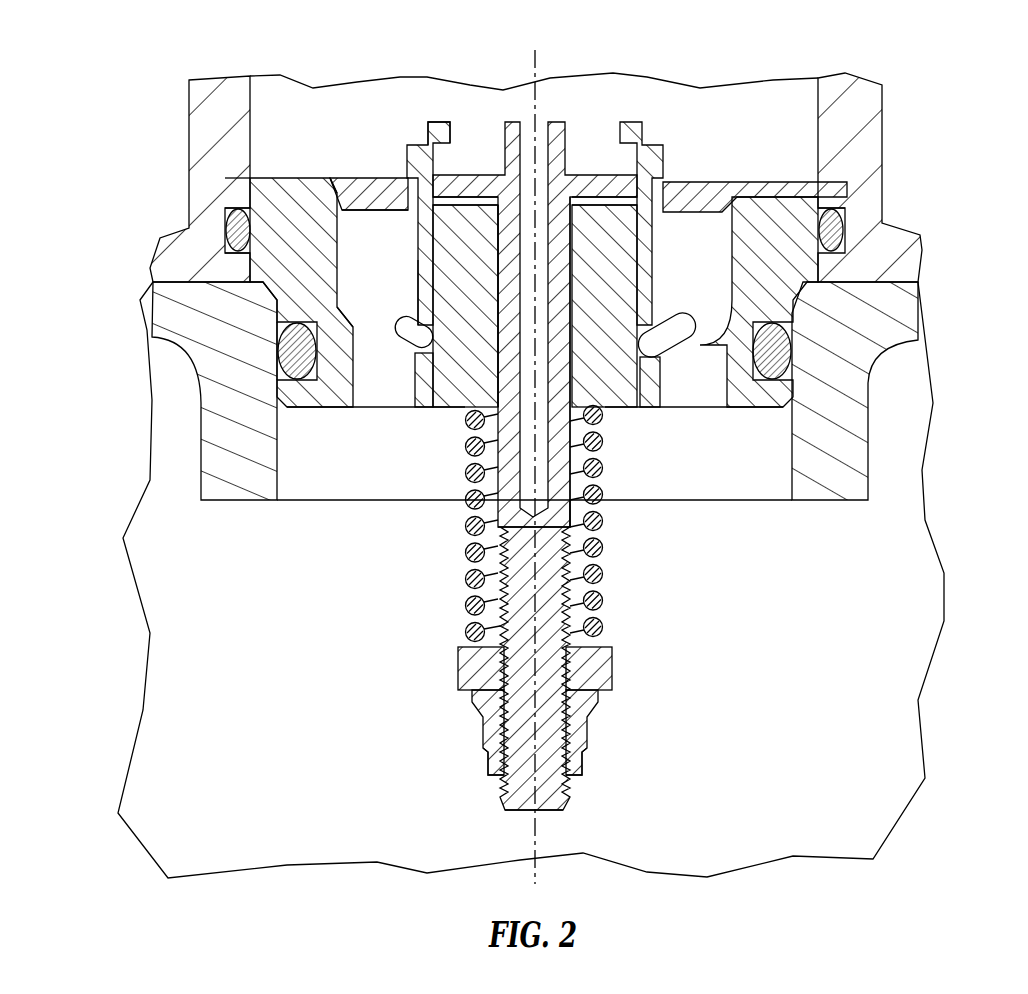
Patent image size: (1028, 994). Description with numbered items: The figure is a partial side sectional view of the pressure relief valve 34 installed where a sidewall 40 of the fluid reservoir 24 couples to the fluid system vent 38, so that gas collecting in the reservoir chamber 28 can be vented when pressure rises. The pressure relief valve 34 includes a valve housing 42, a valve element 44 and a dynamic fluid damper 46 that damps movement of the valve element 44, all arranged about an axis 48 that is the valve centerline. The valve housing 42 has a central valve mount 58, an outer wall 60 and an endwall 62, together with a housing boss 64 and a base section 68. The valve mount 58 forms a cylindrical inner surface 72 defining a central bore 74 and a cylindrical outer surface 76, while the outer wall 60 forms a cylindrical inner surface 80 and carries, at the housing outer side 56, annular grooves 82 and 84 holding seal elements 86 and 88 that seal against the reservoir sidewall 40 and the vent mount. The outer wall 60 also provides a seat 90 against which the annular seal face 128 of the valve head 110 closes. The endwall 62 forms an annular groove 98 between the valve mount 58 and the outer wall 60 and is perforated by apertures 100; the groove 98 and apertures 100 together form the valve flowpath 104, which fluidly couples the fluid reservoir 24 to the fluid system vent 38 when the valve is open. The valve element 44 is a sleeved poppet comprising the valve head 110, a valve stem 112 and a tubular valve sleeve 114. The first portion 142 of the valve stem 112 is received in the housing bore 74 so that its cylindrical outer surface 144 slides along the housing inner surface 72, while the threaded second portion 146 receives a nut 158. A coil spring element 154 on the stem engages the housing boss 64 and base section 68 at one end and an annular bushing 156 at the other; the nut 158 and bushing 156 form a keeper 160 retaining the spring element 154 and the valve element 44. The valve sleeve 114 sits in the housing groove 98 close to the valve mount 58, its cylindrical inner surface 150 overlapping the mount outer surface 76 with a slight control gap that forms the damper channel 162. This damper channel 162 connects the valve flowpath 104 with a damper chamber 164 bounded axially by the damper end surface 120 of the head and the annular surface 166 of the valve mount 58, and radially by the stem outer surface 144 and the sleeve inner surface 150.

The fluid reservoir 24 is at (549, 391).
The reservoir chamber 28 is at (292, 680).
The pressure relief valve 34 is at (775, 118).
The fluid system vent 38 is at (447, 286).
The sidewall 40 is at (150, 310).
The valve housing 42 is at (287, 180).
The valve element 44 is at (420, 140).
The dynamic fluid damper 46 is at (480, 190).
The axis 48 is at (535, 883).
The outer side 56 is at (226, 198).
The central valve mount 58 is at (460, 432).
The outer wall 60 is at (240, 185).
The endwall 62 is at (735, 410).
The housing boss 64 is at (606, 452).
The base section 68 is at (765, 425).
The cylindrical inner surface 72 is at (498, 300).
The central internal bore 74 is at (568, 228).
The cylindrical outer surface 76 is at (405, 283).
The cylindrical inner surface 80 is at (339, 243).
The annular groove 82 is at (224, 248).
The annular groove 84 is at (277, 372).
The seal element 86 is at (230, 228).
The seal element 88 is at (285, 338).
The seat 90 is at (352, 195).
The annular groove 98 is at (318, 352).
The apertures 100 is at (376, 352).
The valve flowpath 104 is at (708, 248).
The valve head 110 is at (396, 163).
The valve stem 112 is at (512, 812).
The valve sleeve 114 is at (655, 270).
The damper end surface 120 is at (625, 210).
The seal face 128 is at (318, 190).
The first portion 142 is at (568, 512).
The cylindrical outer surface 144 is at (494, 333).
The second portion 146 is at (568, 578).
The cylindrical inner surface 150 is at (482, 292).
The spring element 154 is at (605, 617).
The annular bushing 156 is at (615, 668).
The nut 158 is at (590, 732).
The keeper 160 is at (455, 708).
The damper channel 162 is at (424, 380).
The damper chamber 164 is at (458, 198).
The annular surface 166 is at (612, 225).